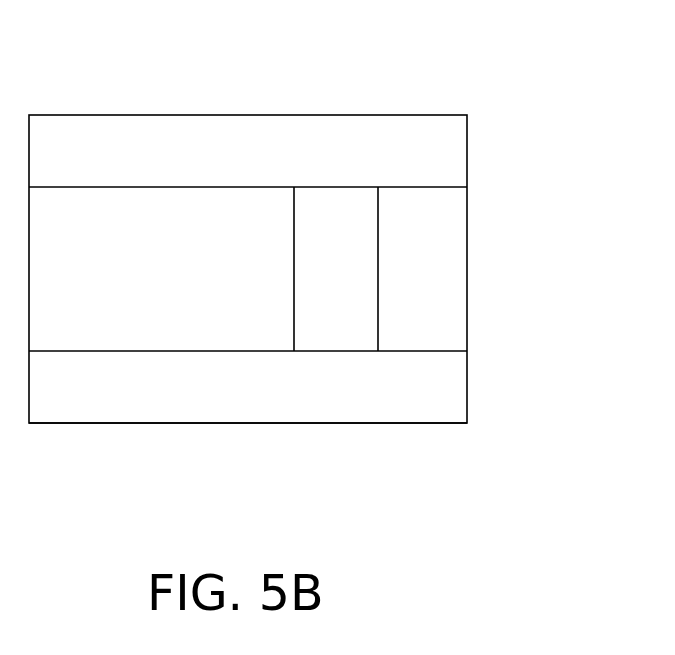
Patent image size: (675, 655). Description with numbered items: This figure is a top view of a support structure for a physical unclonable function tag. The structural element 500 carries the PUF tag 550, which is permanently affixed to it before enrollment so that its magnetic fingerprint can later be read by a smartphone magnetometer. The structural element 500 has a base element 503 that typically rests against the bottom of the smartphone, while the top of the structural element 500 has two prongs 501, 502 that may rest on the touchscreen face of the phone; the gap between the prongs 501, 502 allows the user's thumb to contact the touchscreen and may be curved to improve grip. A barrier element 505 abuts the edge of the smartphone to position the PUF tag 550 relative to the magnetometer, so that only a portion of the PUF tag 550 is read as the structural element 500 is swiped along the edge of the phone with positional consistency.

The structural element 500 is at (103, 92).
The prong 501 is at (482, 155).
The prong 502 is at (480, 400).
The base element 503 is at (482, 310).
The barrier element 505 is at (307, 263).
The physical unclonable function tag 550 is at (339, 328).